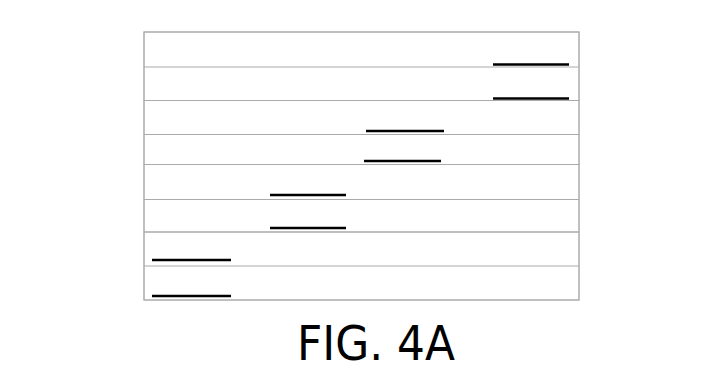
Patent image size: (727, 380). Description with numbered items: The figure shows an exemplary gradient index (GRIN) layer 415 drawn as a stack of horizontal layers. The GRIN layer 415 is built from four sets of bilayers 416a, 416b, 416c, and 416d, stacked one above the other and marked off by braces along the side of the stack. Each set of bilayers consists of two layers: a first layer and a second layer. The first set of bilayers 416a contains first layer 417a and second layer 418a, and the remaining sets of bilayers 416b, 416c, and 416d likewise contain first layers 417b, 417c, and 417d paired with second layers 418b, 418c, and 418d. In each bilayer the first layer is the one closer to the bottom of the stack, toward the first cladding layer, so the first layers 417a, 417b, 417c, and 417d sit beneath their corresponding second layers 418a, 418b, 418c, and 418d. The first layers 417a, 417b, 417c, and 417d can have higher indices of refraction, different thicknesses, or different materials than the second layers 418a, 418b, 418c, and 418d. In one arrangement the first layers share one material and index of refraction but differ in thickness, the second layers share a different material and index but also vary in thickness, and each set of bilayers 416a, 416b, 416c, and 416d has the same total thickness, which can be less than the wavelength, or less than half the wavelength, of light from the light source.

The GRIN layer 415 is at (579, 32).
The set of bilayers 416a is at (140, 36).
The set of bilayers 416b is at (140, 102).
The set of bilayers 416c is at (140, 166).
The set of bilayers 416d is at (140, 233).
The first layer 417a is at (531, 82).
The first layer 417b is at (402, 145).
The first layer 417c is at (308, 214).
The first layer 417d is at (191, 282).
The second layer 418a is at (531, 49).
The second layer 418b is at (405, 116).
The second layer 418c is at (308, 181).
The second layer 418d is at (191, 246).